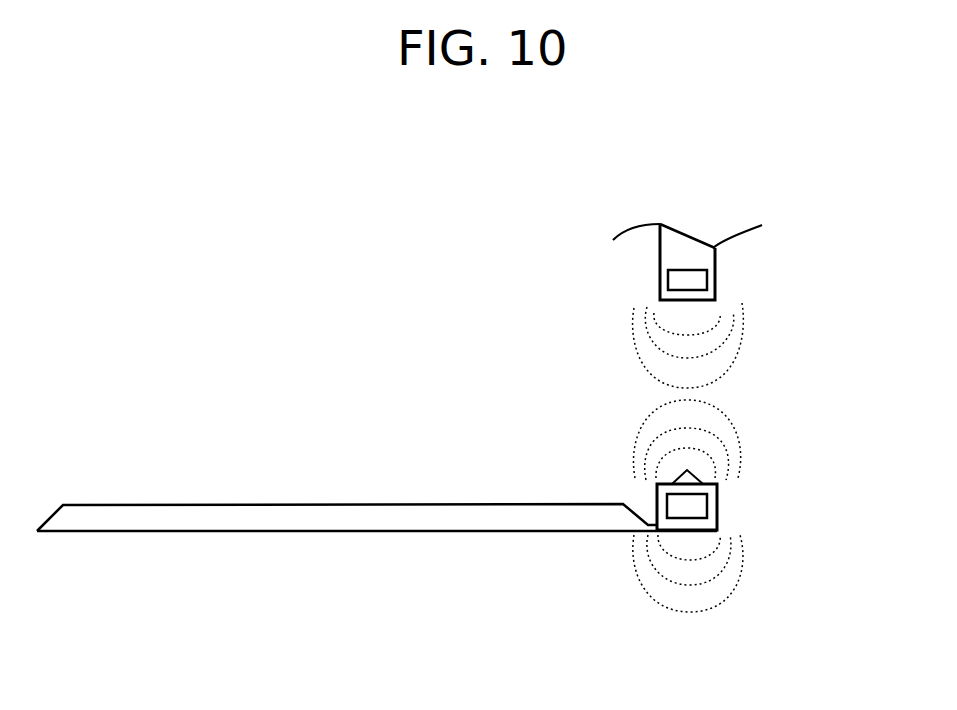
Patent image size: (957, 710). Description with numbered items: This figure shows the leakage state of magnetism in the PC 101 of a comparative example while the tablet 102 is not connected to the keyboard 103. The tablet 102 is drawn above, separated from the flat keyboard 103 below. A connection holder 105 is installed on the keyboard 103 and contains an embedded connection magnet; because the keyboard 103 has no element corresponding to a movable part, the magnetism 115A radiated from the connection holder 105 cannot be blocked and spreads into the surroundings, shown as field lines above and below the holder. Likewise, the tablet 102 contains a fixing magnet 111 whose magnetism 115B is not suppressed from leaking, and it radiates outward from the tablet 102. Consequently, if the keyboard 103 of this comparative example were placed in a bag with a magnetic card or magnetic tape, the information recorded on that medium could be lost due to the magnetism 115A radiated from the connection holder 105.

The PC 101 is at (369, 315).
The tablet 102 is at (702, 258).
The keyboard 103 is at (214, 465).
The connection holder 105 is at (700, 503).
The fixing magnet 111 is at (705, 270).
The magnetism 115A is at (740, 430).
The magnetism 115B is at (742, 352).